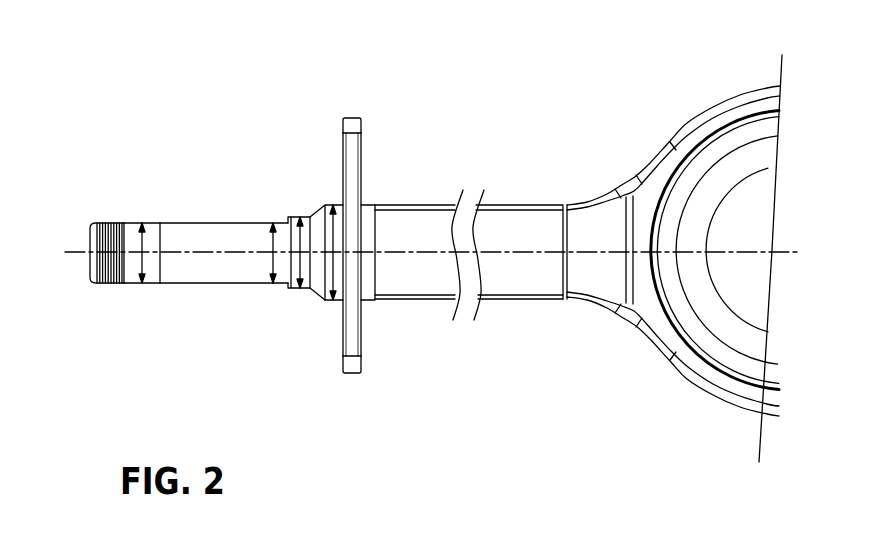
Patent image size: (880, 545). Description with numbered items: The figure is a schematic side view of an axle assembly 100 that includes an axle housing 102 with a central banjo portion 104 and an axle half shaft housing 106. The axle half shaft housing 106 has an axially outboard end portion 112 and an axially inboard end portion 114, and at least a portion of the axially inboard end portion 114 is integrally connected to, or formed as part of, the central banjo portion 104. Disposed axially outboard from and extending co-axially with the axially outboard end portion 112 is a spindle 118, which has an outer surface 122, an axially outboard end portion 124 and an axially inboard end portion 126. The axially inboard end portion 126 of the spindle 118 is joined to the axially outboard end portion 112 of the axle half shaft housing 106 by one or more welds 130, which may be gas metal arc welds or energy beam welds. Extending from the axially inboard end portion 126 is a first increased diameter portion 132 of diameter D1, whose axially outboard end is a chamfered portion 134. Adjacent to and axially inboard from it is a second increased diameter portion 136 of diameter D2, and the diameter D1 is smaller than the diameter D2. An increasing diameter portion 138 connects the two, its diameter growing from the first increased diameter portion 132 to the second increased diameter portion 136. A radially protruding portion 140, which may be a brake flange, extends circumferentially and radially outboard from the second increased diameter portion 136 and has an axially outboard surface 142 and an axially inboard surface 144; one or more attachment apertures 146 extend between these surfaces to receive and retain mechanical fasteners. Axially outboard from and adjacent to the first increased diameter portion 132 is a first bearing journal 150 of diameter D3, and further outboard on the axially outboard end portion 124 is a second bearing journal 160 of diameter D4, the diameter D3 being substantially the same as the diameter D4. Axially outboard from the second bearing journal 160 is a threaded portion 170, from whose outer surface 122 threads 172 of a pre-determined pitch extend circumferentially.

The axle assembly 100 is at (600, 88).
The axle housing 102 is at (650, 156).
The central banjo portion 104 is at (704, 388).
The axle half shaft housing 106 is at (503, 204).
The axially outboard end portion 112 is at (413, 300).
The axially inboard end portion 114 is at (543, 300).
The spindle 118 is at (206, 286).
The outer surface 122 is at (222, 222).
The axially outboard end portion 124 is at (108, 286).
The axially inboard end portion 126 is at (328, 302).
The weld 130 is at (377, 210).
The first increased diameter portion 132 is at (292, 289).
The chamfered portion 134 is at (292, 218).
The second increased diameter portion 136 is at (327, 202).
The increasing diameter portion 138 is at (313, 299).
The radially protruding portion 140 is at (354, 374).
The axially outboard surface 142 is at (342, 349).
The axially inboard surface 144 is at (361, 352).
The attachment aperture 146 is at (351, 118).
The first bearing journal 150 is at (273, 287).
The second bearing journal 160 is at (155, 285).
The threaded portion 170 is at (113, 223).
The threads 172 is at (108, 244).
The diameter of first increased diameter portion D1 is at (300, 247).
The diameter of second increased diameter portion D2 is at (333, 262).
The diameter of first bearing journal D3 is at (272, 226).
The diameter of second bearing journal D4 is at (146, 230).